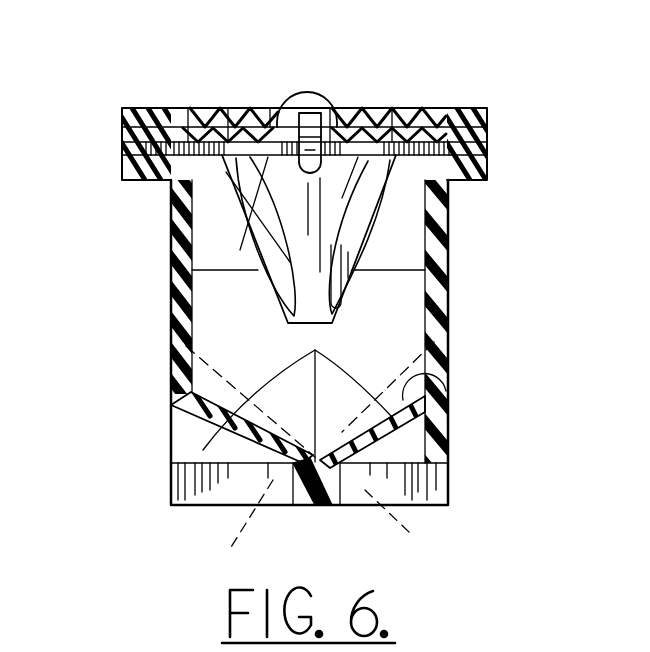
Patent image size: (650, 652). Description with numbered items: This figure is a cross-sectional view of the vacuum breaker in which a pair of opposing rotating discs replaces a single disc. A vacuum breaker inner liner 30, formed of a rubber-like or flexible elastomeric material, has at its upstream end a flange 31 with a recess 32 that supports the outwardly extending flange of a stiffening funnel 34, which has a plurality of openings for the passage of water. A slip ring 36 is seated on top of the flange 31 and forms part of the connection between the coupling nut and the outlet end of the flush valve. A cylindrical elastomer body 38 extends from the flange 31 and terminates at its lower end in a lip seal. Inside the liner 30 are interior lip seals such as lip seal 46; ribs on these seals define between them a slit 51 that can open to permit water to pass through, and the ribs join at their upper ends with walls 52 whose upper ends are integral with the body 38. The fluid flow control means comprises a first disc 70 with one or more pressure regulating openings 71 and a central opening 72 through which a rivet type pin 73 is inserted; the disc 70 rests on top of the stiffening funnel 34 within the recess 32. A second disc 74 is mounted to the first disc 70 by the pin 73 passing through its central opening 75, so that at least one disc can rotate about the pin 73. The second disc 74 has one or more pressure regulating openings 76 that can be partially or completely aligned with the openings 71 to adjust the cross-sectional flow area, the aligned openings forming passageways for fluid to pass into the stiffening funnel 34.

The vacuum breaker inner liner 30 is at (148, 335).
The flange 31 is at (167, 108).
The recess 32 is at (123, 160).
The stiffening funnel 34 is at (352, 284).
The slip ring 36 is at (462, 108).
The body 38 is at (449, 243).
The lip seal 46 is at (316, 518).
The slit 51 is at (314, 517).
The walls 52 is at (440, 388).
The first disc 70 is at (172, 192).
The pressure regulating openings 71 is at (237, 135).
The central opening 72 is at (254, 236).
The rivet type pin 73 is at (304, 92).
The second disc 74 is at (190, 125).
The central opening 75 is at (283, 112).
The pressure regulating opening 76 is at (356, 120).